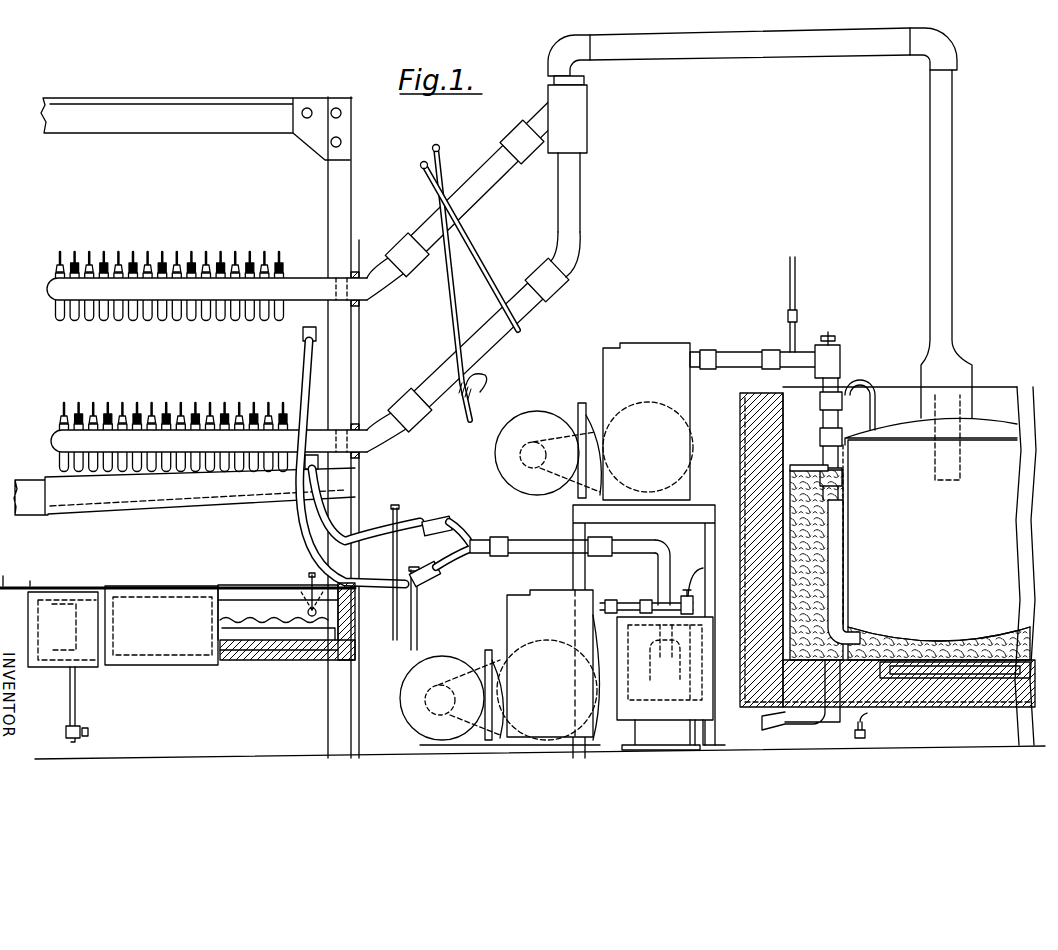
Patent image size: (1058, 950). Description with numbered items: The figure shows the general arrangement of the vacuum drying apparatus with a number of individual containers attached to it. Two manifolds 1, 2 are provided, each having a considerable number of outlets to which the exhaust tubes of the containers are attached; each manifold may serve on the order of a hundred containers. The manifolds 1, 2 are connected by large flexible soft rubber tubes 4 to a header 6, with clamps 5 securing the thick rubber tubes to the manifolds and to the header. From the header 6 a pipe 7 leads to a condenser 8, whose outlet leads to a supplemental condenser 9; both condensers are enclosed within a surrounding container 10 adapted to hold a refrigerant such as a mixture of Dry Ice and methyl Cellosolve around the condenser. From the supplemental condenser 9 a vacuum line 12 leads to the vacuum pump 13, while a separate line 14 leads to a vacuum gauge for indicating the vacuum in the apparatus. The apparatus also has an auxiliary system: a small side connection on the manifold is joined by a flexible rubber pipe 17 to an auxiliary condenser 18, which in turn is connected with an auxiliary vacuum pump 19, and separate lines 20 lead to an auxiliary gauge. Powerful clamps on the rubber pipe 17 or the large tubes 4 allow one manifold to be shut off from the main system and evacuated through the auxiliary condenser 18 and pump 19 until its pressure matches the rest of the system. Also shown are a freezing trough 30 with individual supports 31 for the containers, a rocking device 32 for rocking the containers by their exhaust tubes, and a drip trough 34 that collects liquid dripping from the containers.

The manifold 1 is at (205, 286).
The manifold 2 is at (207, 438).
The flexible soft rubber tube 4 is at (481, 254).
The clamp 5 is at (510, 129).
The header 6 is at (676, 48).
The pipe 7 is at (948, 200).
The condenser 8 is at (980, 425).
The supplemental condenser 9 is at (792, 505).
The surrounding container 10 is at (872, 566).
The vacuum line 12 is at (733, 352).
The vacuum pump 13 is at (645, 345).
The separate line 14 is at (788, 290).
The flexible rubber pipe 17 is at (414, 513).
The auxiliary condenser 18 is at (660, 690).
The auxiliary vacuum pump 19 is at (548, 592).
The separate line 20 is at (695, 568).
The freezing trough 30 is at (281, 623).
The individual support 31 is at (262, 624).
The rocking device 32 is at (242, 585).
The drip trough 34 is at (155, 498).